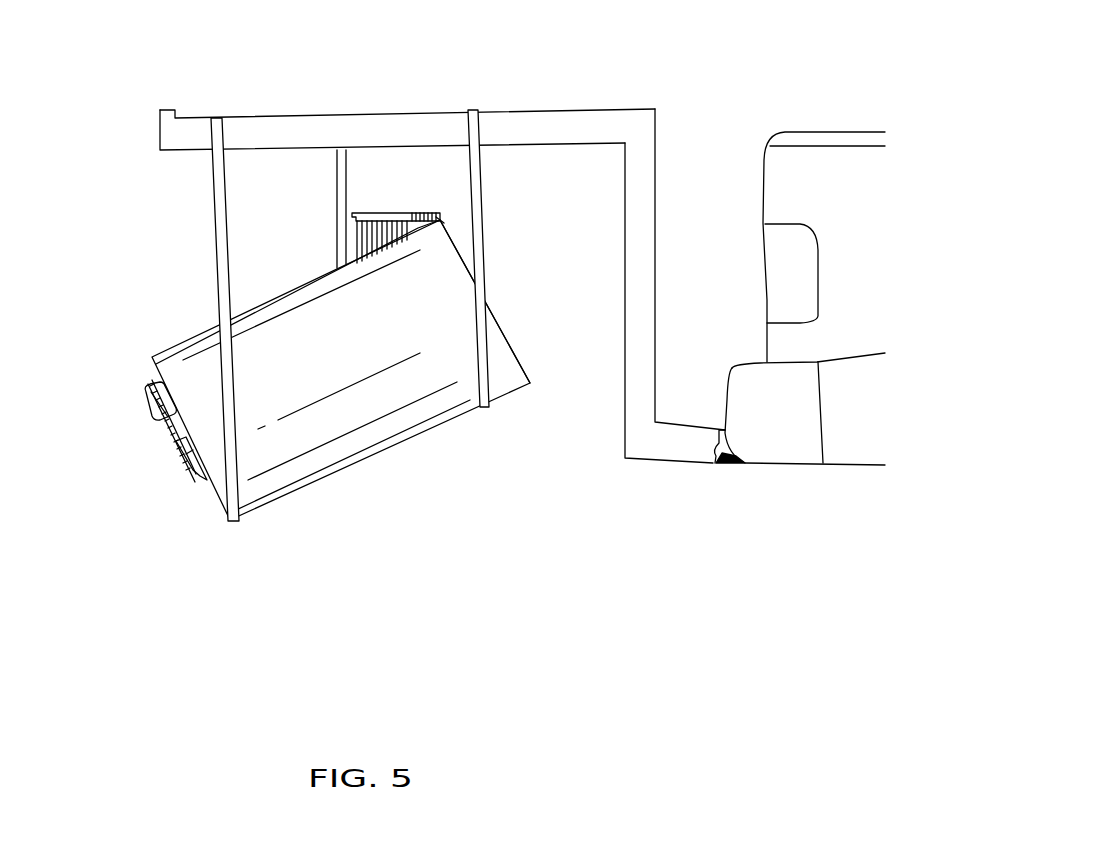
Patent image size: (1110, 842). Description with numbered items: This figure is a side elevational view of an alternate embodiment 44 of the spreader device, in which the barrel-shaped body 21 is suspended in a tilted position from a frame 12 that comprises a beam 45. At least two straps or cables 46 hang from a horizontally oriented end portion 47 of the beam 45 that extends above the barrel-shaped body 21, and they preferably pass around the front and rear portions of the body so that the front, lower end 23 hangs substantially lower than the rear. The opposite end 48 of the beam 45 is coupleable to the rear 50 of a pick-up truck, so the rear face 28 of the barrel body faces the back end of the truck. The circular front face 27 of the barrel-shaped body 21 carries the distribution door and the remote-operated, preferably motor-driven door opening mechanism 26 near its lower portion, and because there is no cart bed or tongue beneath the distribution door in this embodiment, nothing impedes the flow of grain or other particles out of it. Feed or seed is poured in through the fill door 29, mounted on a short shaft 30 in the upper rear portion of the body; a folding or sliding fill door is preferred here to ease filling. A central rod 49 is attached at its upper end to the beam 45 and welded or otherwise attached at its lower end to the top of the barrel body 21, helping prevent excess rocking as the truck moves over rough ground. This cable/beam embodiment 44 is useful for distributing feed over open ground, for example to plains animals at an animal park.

The frame 12 is at (188, 182).
The barrel-shaped body 21 is at (524, 349).
The front, lower end 23 is at (218, 492).
The door opening mechanism 26 is at (154, 414).
The front face 27 is at (152, 368).
The rear face 28 is at (490, 312).
The fill door 29 is at (393, 212).
The short shaft 30 is at (440, 220).
The alternate embodiment 44 is at (134, 333).
The beam 45 is at (598, 104).
The straps or cables 46 is at (213, 241).
The horizontally oriented end portion 47 is at (377, 115).
The opposite end 48 is at (695, 437).
The central rod 49 is at (337, 190).
The rear of a pick-up truck 50 is at (862, 225).